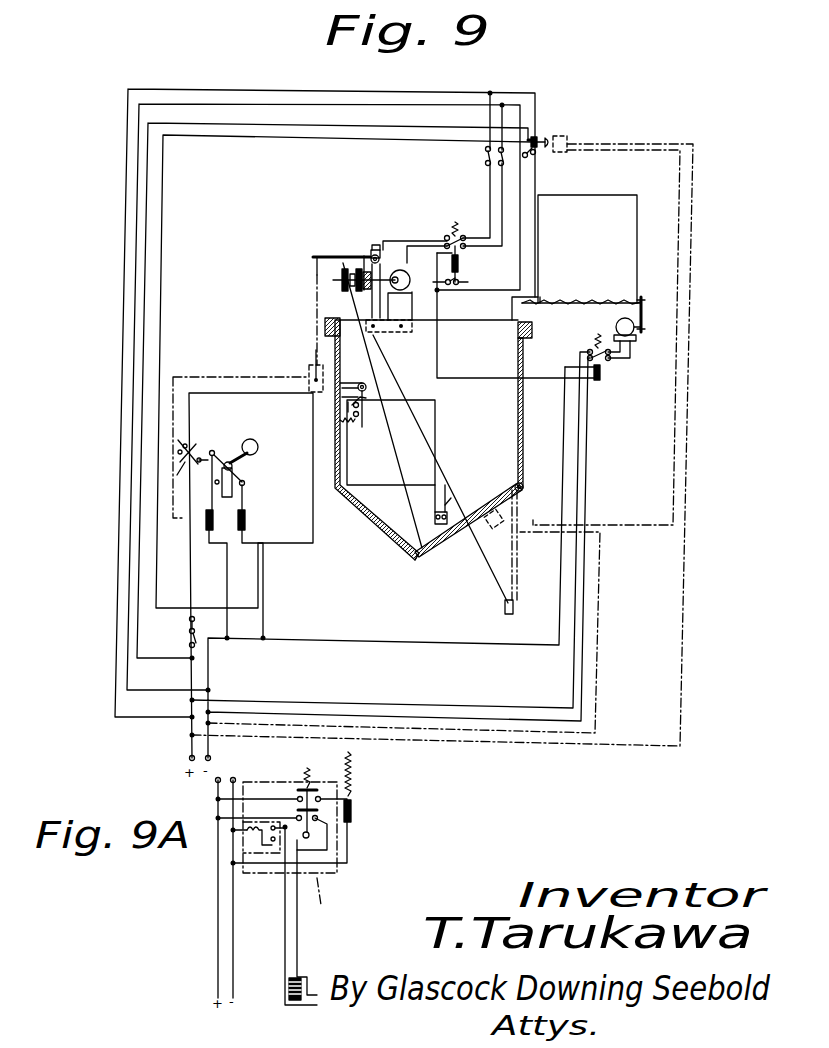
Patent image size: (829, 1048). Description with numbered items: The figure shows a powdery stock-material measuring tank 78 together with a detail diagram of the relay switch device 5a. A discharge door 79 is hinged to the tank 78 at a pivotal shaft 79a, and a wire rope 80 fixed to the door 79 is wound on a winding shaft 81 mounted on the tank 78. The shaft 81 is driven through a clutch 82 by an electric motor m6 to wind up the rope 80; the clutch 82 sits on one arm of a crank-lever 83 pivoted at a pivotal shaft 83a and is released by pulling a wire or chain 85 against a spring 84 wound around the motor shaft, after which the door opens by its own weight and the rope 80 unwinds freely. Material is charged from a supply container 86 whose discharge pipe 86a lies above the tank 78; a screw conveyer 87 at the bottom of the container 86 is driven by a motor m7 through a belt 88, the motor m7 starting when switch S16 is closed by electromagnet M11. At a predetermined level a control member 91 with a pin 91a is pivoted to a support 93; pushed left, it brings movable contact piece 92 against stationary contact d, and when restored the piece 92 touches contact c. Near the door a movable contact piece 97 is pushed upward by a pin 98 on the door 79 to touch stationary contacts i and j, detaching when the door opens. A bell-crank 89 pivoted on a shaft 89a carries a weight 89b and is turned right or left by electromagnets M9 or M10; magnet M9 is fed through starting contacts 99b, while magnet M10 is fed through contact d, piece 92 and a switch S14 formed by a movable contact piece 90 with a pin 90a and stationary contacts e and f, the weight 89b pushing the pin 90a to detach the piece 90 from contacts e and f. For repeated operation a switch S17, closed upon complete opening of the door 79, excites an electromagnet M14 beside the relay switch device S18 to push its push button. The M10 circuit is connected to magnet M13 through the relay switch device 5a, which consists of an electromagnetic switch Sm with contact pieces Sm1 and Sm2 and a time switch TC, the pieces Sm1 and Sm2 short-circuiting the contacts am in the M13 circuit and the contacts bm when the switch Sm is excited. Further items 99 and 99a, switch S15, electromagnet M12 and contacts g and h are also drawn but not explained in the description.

In FIG. 9, the lever 99 is at (533, 136).
In FIG. 9, the contact arms 99a is at (538, 136).
In FIG. 9, the starting contacts 99b is at (523, 160).
In FIG. 9, the relay switch device S18 is at (548, 138).
In FIG. 9, the electromagnet M14 is at (570, 140).
In FIG. 9, the electromagnetic switch Sm is at (485, 155).
In FIG. 9A, the electromagnetic switch Sm is at (308, 838).
In FIG. 9, the switch S15 is at (460, 234).
In FIG. 9, the magnet M12 is at (460, 262).
In FIG. 9, the contact g is at (437, 271).
In FIG. 9, the contact h is at (464, 282).
In FIG. 9, the crank-lever 83 is at (318, 256).
In FIG. 9, the pivotal shaft 83a is at (377, 244).
In FIG. 9, the winding shaft 81 is at (346, 262).
In FIG. 9, the clutch 82 is at (371, 252).
In FIG. 9, the spring 84 is at (390, 250).
In FIG. 9, the wire or chain 85 is at (317, 280).
In FIG. 9A, the wire or chain 85 is at (352, 770).
In FIG. 9, the electric motor m6 is at (415, 280).
In FIG. 9, the wire rope 80 is at (398, 450).
In FIG. 9, the measuring tank 78 is at (523, 424).
In FIG. 9, the stock-material supply container 86 is at (632, 218).
In FIG. 9, the discharge pipe 86a is at (512, 310).
In FIG. 9, the screw conveyer 87 is at (590, 302).
In FIG. 9, the belt 88 is at (644, 318).
In FIG. 9, the electric motor m7 is at (617, 320).
In FIG. 9, the switch S16 is at (588, 348).
In FIG. 9, the electromagnet M11 is at (601, 376).
In FIG. 9, the electromagnet M13 is at (310, 365).
In FIG. 9A, the electromagnet M13 is at (353, 811).
In FIG. 9, the support 93 is at (362, 382).
In FIG. 9, the movable contact piece 92 is at (340, 397).
In FIG. 9, the pin 91a is at (368, 408).
In FIG. 9, the control member 91 is at (360, 418).
In FIG. 9, the stationary contact c is at (365, 409).
In FIG. 9, the stationary contact d is at (337, 418).
In FIG. 9, the pivotal shaft 79a is at (523, 484).
In FIG. 9, the discharge door 79 is at (478, 518).
In FIG. 9, the movable contact piece 97 is at (419, 558).
In FIG. 9, the pin 98 is at (446, 526).
In FIG. 9, the stationary contact i is at (433, 520).
In FIG. 9, the stationary contact j is at (452, 491).
In FIG. 9, the switch S17 is at (494, 510).
In FIG. 9, the switch S14 is at (191, 444).
In FIG. 9, the stationary contact e is at (177, 442).
In FIG. 9, the stationary contact f is at (202, 466).
In FIG. 9, the movable contact piece 90 is at (178, 477).
In FIG. 9, the pin 90a is at (212, 450).
In FIG. 9, the weight 89b is at (253, 439).
In FIG. 9, the bell-crank 89 is at (233, 466).
In FIG. 9, the shaft 89a is at (244, 480).
In FIG. 9, the electromagnet M9 is at (248, 516).
In FIG. 9, the electromagnet M10 is at (205, 528).
In FIG. 9A, the electromagnet M10 is at (293, 1002).
In FIG. 9A, the contact piece Sm1 is at (312, 784).
In FIG. 9A, the contact piece Sm2 is at (318, 812).
In FIG. 9A, the contacts am is at (298, 795).
In FIG. 9A, the contacts bm is at (296, 816).
In FIG. 9A, the time switch TC is at (260, 860).
In FIG. 9A, the relay switch device 5a is at (316, 899).